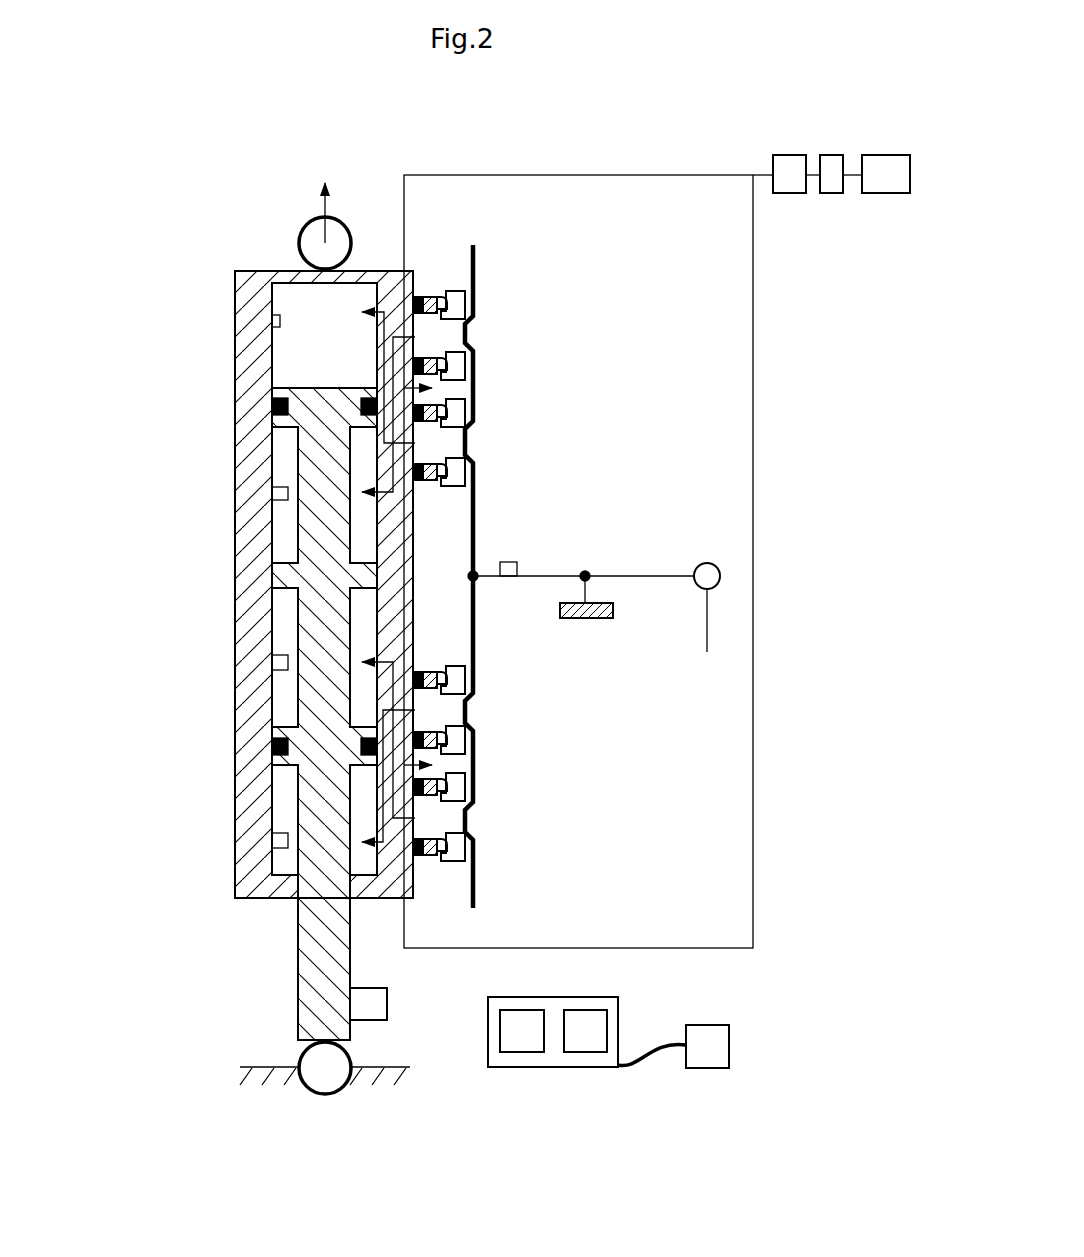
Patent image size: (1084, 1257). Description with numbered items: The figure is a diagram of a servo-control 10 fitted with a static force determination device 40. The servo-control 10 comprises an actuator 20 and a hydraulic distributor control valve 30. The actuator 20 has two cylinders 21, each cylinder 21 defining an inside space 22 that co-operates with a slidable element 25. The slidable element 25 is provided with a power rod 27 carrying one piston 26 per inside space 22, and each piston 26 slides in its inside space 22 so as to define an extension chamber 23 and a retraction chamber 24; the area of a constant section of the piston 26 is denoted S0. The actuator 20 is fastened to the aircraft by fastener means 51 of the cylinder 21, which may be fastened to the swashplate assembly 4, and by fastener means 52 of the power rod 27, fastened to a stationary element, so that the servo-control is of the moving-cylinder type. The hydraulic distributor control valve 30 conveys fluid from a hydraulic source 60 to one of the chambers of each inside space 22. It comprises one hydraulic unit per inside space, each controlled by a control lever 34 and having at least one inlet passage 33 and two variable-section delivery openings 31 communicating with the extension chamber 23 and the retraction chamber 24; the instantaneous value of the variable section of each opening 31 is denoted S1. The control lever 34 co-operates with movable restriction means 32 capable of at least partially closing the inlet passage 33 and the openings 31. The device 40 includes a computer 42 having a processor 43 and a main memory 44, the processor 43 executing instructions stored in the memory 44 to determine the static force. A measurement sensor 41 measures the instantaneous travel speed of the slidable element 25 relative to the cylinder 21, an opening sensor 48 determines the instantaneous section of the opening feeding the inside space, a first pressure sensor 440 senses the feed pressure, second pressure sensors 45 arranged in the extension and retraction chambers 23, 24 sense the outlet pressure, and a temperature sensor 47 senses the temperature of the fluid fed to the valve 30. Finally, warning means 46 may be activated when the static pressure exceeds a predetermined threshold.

The servo-control 10 is at (143, 360).
The actuator 20 is at (325, 160).
The cylinder 21 is at (237, 445).
The inside space 22 is at (285, 412).
The extension chamber 23 is at (290, 345).
The retraction chamber 24 is at (282, 522).
The slidable element 25 is at (270, 964).
The piston 26 is at (290, 388).
The power rod 27 is at (298, 928).
The hydraulic distributor control valve 30 is at (428, 268).
The variable-section delivery opening 31 is at (453, 330).
The movable restriction means 32 is at (475, 413).
The inlet passage 33 is at (450, 388).
The control lever 34 is at (648, 576).
The swashplate assembly 4 is at (310, 207).
The static force determination device 40 is at (537, 157).
The measurement sensor 41 is at (387, 1005).
The computer 42 is at (618, 1015).
The processor 43 is at (527, 1052).
The main memory 44 is at (595, 1052).
The second pressure sensor 45 is at (275, 322).
The warning means 46 is at (707, 1068).
The temperature sensor 47 is at (830, 155).
The opening sensor 48 is at (517, 569).
The fastener means of the cylinder 51 is at (340, 220).
The fastener means of the power rod 52 is at (333, 1080).
The hydraulic source 60 is at (885, 155).
The first pressure sensor 440 is at (775, 155).
The area of a constant section of the piston S0 is at (335, 386).
The instantaneous value of the variable section of the opening S1 is at (480, 342).